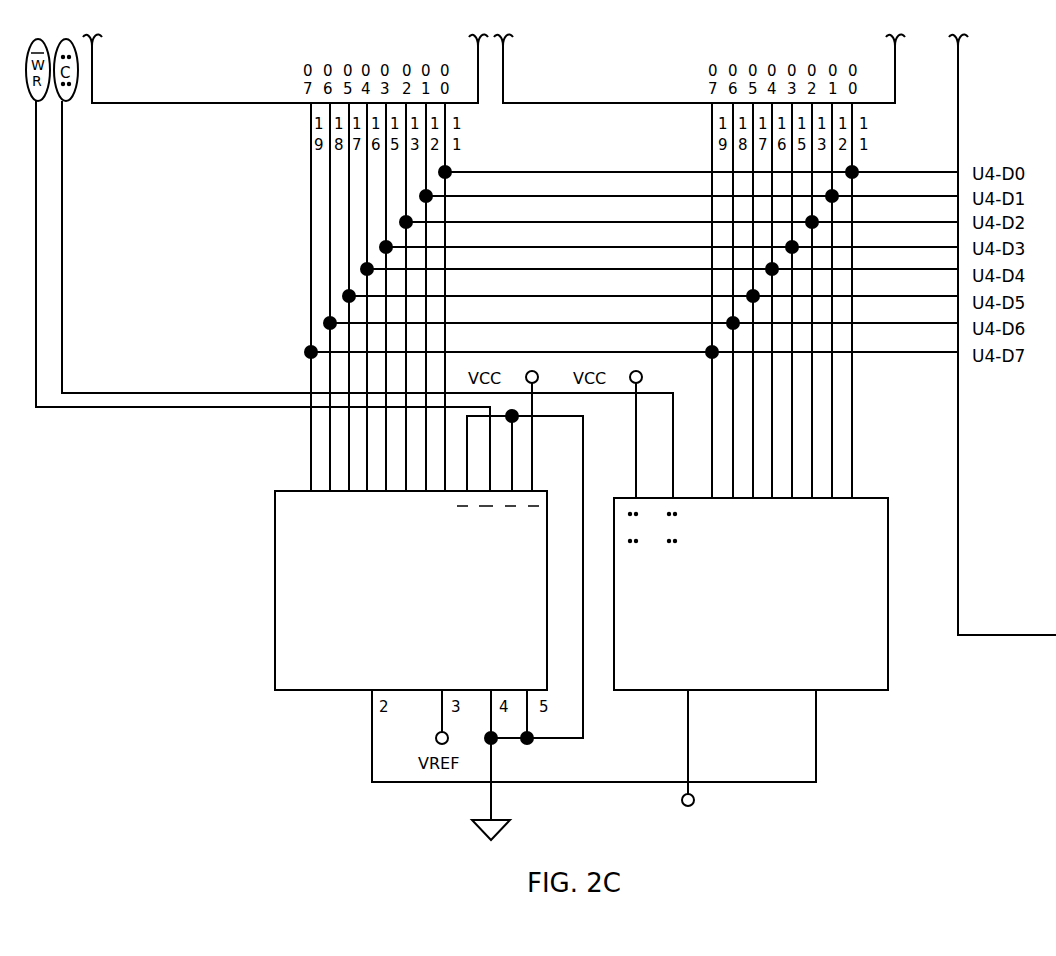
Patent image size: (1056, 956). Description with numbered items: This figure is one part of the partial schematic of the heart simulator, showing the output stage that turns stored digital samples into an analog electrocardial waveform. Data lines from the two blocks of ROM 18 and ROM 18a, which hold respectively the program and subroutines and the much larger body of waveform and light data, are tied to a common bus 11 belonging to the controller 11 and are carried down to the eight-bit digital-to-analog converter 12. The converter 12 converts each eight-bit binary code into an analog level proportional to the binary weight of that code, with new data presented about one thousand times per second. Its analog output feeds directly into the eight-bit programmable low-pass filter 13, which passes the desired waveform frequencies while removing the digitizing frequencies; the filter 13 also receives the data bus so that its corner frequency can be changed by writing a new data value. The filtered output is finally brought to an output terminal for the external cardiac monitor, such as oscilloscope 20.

The ROM 18 is at (118, 101).
The second block of ROM 18a is at (540, 101).
The controller 11 is at (1045, 489).
The digital-to-analog converter 12 is at (275, 588).
The programmable low-pass filter 13 is at (888, 585).
The oscilloscope 20 is at (689, 766).